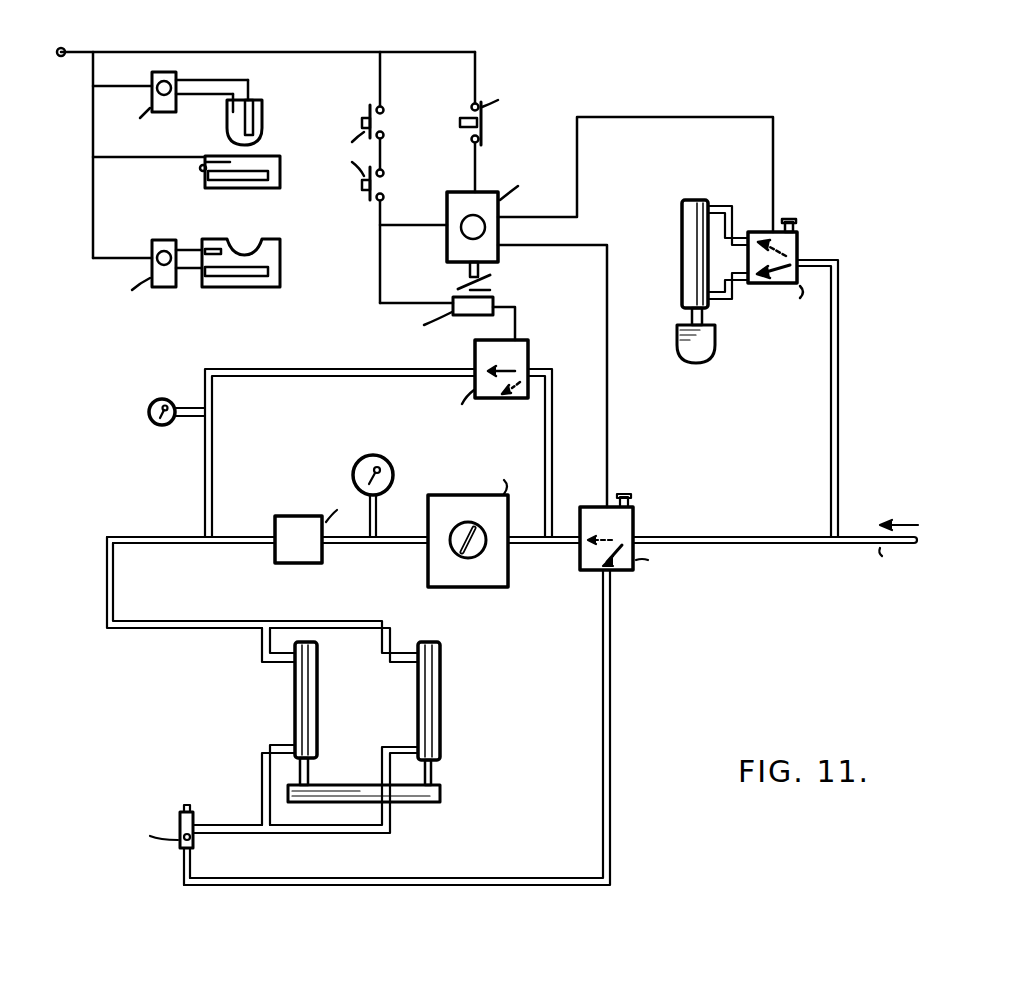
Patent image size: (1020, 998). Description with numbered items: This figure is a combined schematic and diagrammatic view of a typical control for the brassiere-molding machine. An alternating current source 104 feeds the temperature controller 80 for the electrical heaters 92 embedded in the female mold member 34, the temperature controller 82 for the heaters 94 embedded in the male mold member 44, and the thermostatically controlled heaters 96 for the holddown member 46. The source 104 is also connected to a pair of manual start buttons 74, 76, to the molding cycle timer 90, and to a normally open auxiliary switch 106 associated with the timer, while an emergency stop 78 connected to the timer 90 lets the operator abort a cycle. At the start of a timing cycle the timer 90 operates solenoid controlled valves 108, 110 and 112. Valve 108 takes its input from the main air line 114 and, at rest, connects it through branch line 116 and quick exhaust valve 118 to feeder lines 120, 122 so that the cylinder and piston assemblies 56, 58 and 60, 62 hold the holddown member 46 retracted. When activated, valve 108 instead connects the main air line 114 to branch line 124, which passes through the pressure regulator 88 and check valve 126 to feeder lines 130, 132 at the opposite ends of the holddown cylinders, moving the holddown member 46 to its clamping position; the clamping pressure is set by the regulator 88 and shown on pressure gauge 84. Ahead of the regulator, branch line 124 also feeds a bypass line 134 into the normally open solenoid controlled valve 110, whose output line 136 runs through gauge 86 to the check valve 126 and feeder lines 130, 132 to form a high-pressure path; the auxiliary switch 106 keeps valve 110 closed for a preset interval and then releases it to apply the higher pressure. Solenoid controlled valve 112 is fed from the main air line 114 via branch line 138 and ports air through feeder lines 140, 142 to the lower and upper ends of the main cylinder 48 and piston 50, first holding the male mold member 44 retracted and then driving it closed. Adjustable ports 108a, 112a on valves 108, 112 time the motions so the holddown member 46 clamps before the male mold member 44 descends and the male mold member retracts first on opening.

The alternating current source 104 is at (63, 49).
The temperature controller 82 is at (151, 78).
The temperature controller 80 is at (152, 243).
The electrical heaters 94 is at (262, 110).
The male mold member 44 is at (463, 225).
The holddown member 46 is at (285, 483).
The heaters 96 is at (256, 178).
The female mold member 34 is at (246, 276).
The electrical heaters 92 is at (250, 278).
The start button 74 is at (368, 108).
The start button 76 is at (366, 203).
The stop button 78 is at (484, 128).
The molding cycle timer 90 is at (456, 190).
The auxiliary switch 106 is at (495, 298).
The solenoid controlled valve 110 is at (530, 350).
The main air line 114 is at (786, 546).
The branch line 124 is at (522, 546).
The feeder line 130 is at (360, 620).
The feeder line 132 is at (262, 664).
The output line 136 is at (326, 366).
The bypass line 134 is at (553, 446).
The pressure gauge 86 is at (158, 398).
The pressure gauge 84 is at (370, 456).
The check valve 126 is at (322, 560).
The pressure regulator 88 is at (504, 588).
The solenoid controlled valve 108 is at (636, 522).
The adjustable port 108a is at (628, 495).
The branch line 116 is at (611, 774).
The quick exhaust valve 118 is at (193, 816).
The feeder line 120 is at (392, 828).
The feeder line 122 is at (260, 758).
The branch line 138 is at (839, 392).
The feeder line 142 is at (730, 204).
The feeder line 140 is at (722, 302).
The main cylinder 48 is at (692, 199).
The piston 50 is at (690, 316).
The solenoid controlled valve 112 is at (798, 249).
The adjustable port 112a is at (794, 218).
The cylinder 60 is at (317, 695).
The piston 62 is at (308, 776).
The cylinder 56 is at (441, 685).
The piston 58 is at (431, 774).